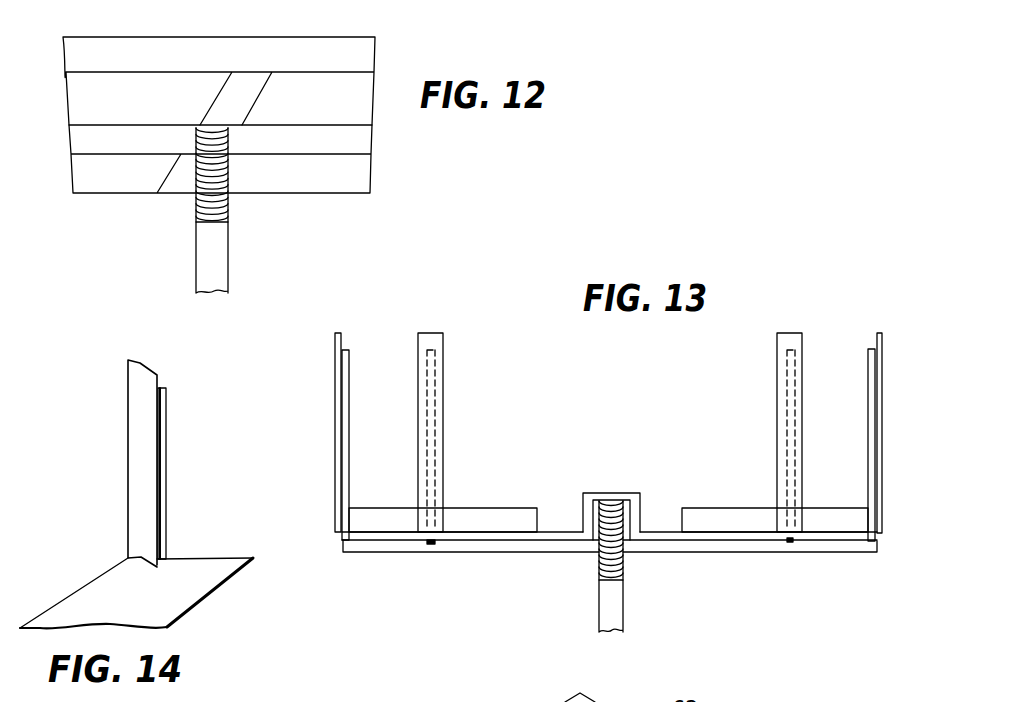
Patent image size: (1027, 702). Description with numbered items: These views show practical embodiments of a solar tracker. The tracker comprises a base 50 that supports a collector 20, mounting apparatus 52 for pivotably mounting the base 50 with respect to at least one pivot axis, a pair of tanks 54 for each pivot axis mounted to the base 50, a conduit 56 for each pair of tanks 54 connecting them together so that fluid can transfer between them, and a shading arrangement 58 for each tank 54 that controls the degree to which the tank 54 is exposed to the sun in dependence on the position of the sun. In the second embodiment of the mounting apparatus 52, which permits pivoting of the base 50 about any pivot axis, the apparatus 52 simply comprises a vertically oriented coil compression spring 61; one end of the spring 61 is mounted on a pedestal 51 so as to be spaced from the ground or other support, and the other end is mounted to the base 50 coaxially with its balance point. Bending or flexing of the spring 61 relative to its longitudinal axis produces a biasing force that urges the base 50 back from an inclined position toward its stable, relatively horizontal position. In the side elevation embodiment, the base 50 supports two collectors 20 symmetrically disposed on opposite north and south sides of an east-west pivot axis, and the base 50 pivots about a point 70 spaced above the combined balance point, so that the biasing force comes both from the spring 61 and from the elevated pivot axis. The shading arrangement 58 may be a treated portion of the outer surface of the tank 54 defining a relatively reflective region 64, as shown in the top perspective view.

In FIG. 12, the collector 20 is at (325, 48).
In FIG. 13, the collector 20 is at (521, 508).
In FIG. 12, the base 50 is at (312, 147).
In FIG. 13, the base 50 is at (667, 538).
In FIG. 14, the base 50 is at (155, 610).
In FIG. 12, the pedestal 51 is at (229, 258).
In FIG. 13, the pedestal 51 is at (610, 613).
In FIG. 12, the mounting apparatus 52 is at (202, 210).
In FIG. 13, the mounting apparatus 52 is at (625, 572).
In FIG. 13, the tank 54 is at (350, 357).
In FIG. 14, the tank 54 is at (162, 475).
In FIG. 13, the conduit 56 is at (382, 553).
In FIG. 13, the shading arrangement 58 is at (335, 420).
In FIG. 12, the coil compression spring 61 is at (229, 208).
In FIG. 13, the coil compression spring 61 is at (600, 563).
In FIG. 14, the reflective region 64 is at (138, 497).
In FIG. 13, the pivot point 70 is at (612, 493).